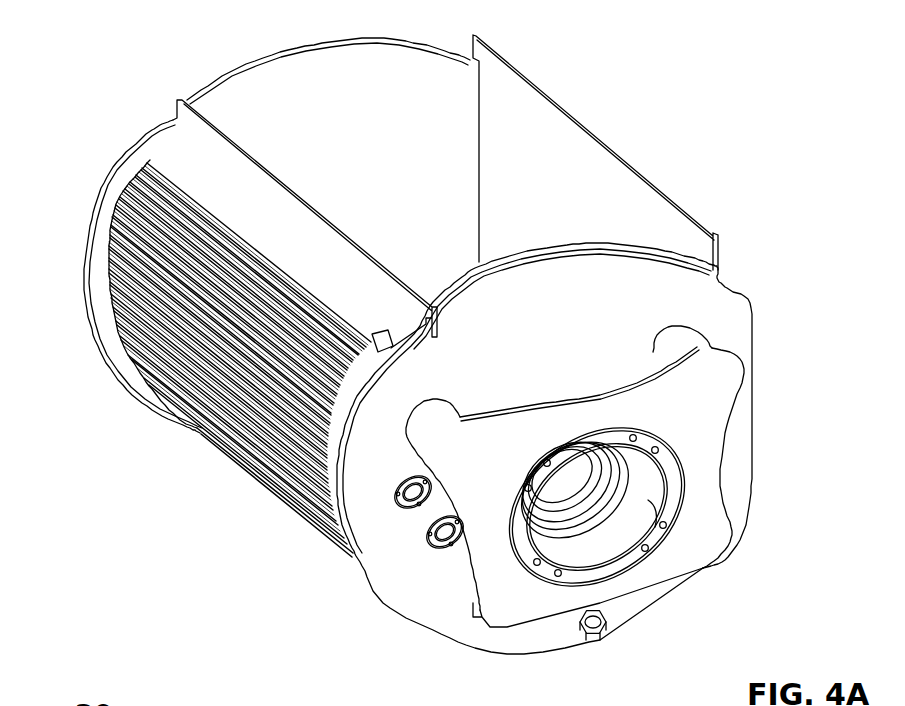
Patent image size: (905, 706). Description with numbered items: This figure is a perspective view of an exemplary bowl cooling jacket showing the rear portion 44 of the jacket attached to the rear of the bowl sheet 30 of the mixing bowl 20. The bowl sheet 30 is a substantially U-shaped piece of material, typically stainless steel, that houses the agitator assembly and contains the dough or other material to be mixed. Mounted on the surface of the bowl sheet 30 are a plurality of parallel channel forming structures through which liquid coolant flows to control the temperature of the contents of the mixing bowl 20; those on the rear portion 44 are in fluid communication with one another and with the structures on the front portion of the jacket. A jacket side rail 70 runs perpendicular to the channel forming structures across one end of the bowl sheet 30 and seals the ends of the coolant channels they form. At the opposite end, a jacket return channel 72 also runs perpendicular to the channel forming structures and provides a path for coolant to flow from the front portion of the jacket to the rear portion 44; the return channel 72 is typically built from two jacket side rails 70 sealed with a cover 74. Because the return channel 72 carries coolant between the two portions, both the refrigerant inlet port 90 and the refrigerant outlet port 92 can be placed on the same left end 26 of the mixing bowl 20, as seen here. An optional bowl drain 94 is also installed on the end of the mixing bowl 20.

The mixing bowl 20 is at (185, 52).
The left end 26 is at (571, 339).
The bowl sheet 30 is at (316, 251).
The rear portion of bowl cooling jacket 44 is at (228, 447).
The jacket side rail 70 is at (110, 282).
The jacket return channel 72 is at (366, 350).
The cover 74 is at (333, 447).
The refrigerant inlet port 90 is at (455, 548).
The refrigerant outlet port 92 is at (413, 512).
The bowl drain 94 is at (607, 627).